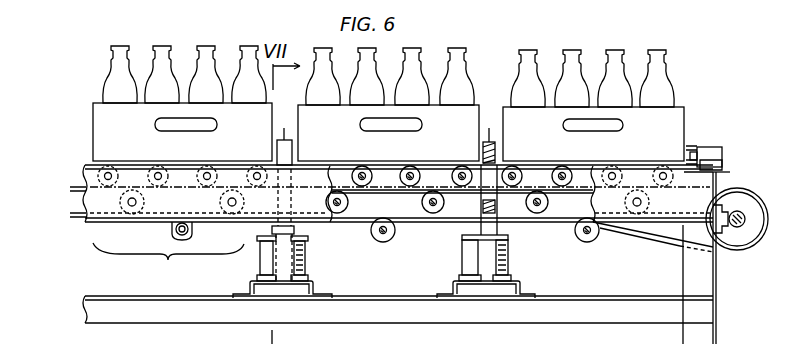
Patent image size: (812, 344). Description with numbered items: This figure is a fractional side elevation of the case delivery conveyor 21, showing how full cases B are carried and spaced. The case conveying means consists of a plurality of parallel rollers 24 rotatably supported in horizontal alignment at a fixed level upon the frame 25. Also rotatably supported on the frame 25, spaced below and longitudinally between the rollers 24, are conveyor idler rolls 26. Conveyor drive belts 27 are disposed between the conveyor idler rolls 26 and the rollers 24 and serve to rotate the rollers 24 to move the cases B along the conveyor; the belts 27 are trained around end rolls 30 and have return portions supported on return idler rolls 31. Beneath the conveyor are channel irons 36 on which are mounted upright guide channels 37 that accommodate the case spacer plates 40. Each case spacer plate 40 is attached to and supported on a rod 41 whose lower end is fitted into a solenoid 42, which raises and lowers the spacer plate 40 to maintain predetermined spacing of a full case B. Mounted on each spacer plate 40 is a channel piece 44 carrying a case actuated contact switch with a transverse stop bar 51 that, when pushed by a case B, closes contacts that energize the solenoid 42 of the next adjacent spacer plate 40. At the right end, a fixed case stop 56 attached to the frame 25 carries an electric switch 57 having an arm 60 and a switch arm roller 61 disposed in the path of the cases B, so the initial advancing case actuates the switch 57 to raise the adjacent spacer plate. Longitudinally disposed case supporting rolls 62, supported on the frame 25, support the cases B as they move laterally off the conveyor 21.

The case delivery conveyor 21 is at (168, 267).
The rollers 24 is at (257, 167).
The frame 25 is at (95, 224).
The conveyor idler rolls 26 is at (218, 202).
The conveyor drive belts 27 is at (358, 223).
The end rolls 30 is at (760, 222).
The return idler rolls 31 is at (193, 231).
The channel irons 36 is at (252, 287).
The upright guide channels 37 is at (266, 259).
The case spacer plate 40 is at (392, 140).
The rod 41 is at (499, 234).
The solenoid 42 is at (306, 259).
The channel piece 44 is at (497, 157).
The transverse stop bar 51 is at (277, 150).
The fixed case stop 56 is at (692, 147).
The electric switch 57 is at (723, 157).
The arm 60 is at (715, 150).
The switch arm roller 61 is at (694, 152).
The case supporting rolls 62 is at (762, 175).
The case B is at (388, 103).